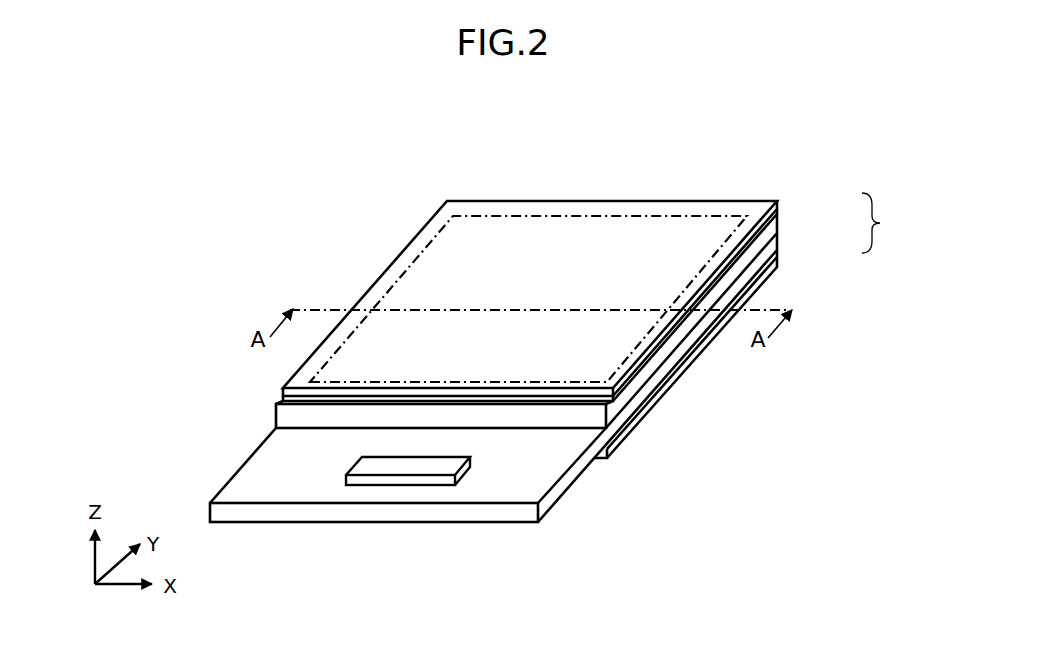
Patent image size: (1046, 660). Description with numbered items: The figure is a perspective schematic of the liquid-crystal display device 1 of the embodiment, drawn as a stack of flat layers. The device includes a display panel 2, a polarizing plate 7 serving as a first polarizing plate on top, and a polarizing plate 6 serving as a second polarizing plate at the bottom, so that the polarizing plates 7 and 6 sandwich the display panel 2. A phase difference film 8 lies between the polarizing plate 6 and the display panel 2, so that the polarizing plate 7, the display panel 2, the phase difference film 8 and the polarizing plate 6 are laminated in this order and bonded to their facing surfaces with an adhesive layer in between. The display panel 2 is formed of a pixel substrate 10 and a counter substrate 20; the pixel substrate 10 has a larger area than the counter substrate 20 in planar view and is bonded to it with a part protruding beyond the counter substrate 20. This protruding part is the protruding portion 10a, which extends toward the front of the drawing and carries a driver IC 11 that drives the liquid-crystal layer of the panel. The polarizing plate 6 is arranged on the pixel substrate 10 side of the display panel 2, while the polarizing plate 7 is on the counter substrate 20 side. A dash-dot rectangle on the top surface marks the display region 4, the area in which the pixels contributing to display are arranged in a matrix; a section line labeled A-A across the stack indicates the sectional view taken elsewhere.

The liquid-crystal display device 1 is at (716, 154).
The display panel 2 is at (881, 223).
The display region 4 is at (566, 216).
The polarizing plate 6 is at (779, 267).
The polarizing plate 7 is at (779, 202).
The phase difference film 8 is at (779, 255).
The pixel substrate 10 is at (779, 238).
The protruding portion 10a is at (539, 476).
The driver IC 11 is at (406, 466).
The counter substrate 20 is at (779, 218).